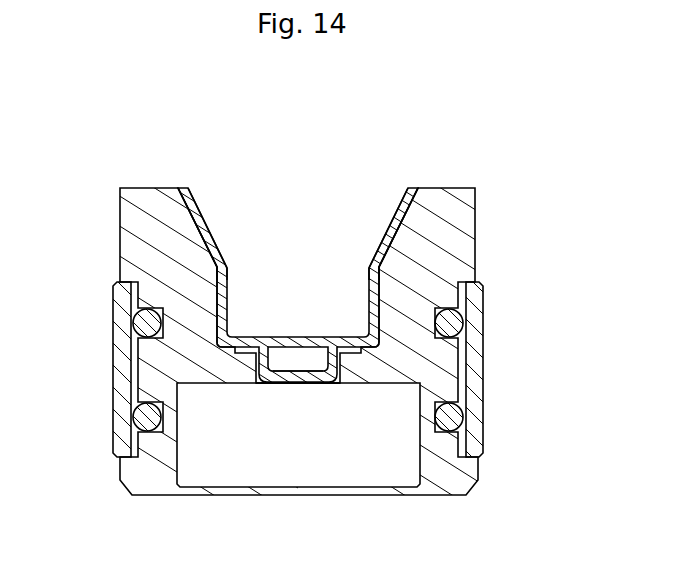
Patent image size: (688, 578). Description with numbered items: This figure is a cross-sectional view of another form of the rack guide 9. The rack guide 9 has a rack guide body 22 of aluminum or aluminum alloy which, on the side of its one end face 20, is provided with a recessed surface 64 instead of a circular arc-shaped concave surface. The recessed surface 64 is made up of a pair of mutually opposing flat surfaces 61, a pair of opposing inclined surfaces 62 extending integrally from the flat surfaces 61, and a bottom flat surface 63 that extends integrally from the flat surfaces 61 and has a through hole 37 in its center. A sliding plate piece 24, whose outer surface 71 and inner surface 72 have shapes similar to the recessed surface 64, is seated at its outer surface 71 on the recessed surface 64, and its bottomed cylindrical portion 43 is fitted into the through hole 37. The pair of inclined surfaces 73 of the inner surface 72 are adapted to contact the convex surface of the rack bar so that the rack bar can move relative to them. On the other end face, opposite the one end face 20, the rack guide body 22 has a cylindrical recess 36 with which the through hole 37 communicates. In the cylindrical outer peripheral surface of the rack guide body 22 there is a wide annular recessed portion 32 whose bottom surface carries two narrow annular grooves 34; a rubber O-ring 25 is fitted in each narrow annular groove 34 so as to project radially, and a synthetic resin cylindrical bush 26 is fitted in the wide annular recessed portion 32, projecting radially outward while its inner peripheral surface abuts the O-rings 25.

The rack guide 9 is at (108, 186).
The one end face 20 is at (443, 188).
The rack guide body 22 is at (135, 256).
The sliding plate piece 24 is at (205, 222).
The O-ring 25 is at (140, 417).
The cylindrical bush 26 is at (477, 367).
The wide annular recessed portion 32 is at (137, 367).
The narrow annular groove 34 is at (140, 323).
The cylindrical recess 36 is at (348, 472).
The through hole 37 is at (263, 385).
The bottomed cylindrical portion 43 is at (322, 373).
The flat surface 61 is at (228, 294).
The inclined surface 62 is at (195, 203).
The bottom flat surface 63 is at (247, 338).
The recessed surface 64 is at (212, 237).
The outer surface 71 is at (396, 240).
The inner surface 72 is at (389, 228).
The inclined surface 73 is at (218, 252).